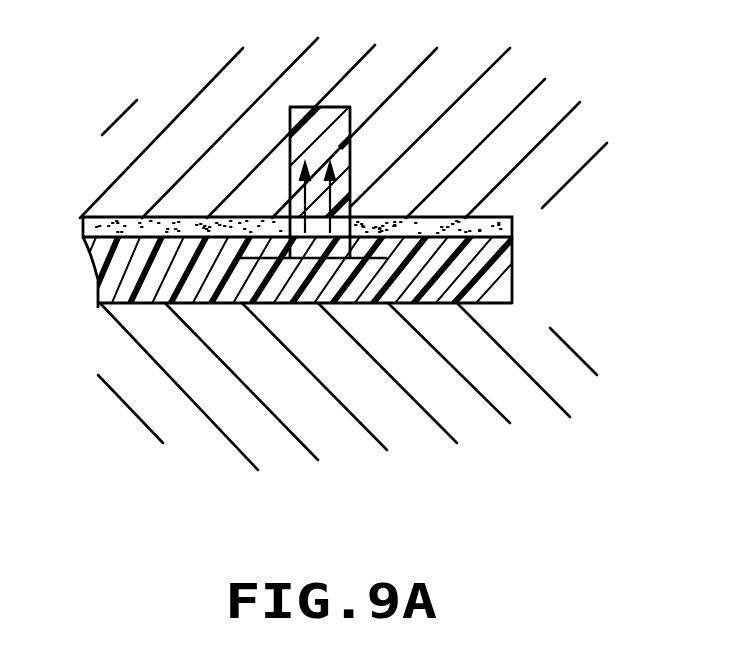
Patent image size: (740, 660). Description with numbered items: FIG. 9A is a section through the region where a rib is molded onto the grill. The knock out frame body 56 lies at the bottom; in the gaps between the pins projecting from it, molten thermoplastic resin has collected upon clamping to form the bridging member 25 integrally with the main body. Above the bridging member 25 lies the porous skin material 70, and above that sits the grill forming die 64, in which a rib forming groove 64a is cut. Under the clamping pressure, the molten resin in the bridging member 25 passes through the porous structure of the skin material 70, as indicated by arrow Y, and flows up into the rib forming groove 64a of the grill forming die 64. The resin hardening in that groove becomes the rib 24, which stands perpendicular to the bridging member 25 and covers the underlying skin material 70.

The grill forming die 64 is at (167, 112).
The rib forming groove 64a is at (350, 107).
The rib 24 is at (290, 150).
The skin material 70 is at (512, 222).
The bridging member 25 is at (497, 263).
The knock out frame body 56 is at (228, 387).
The arrow Y is at (306, 260).